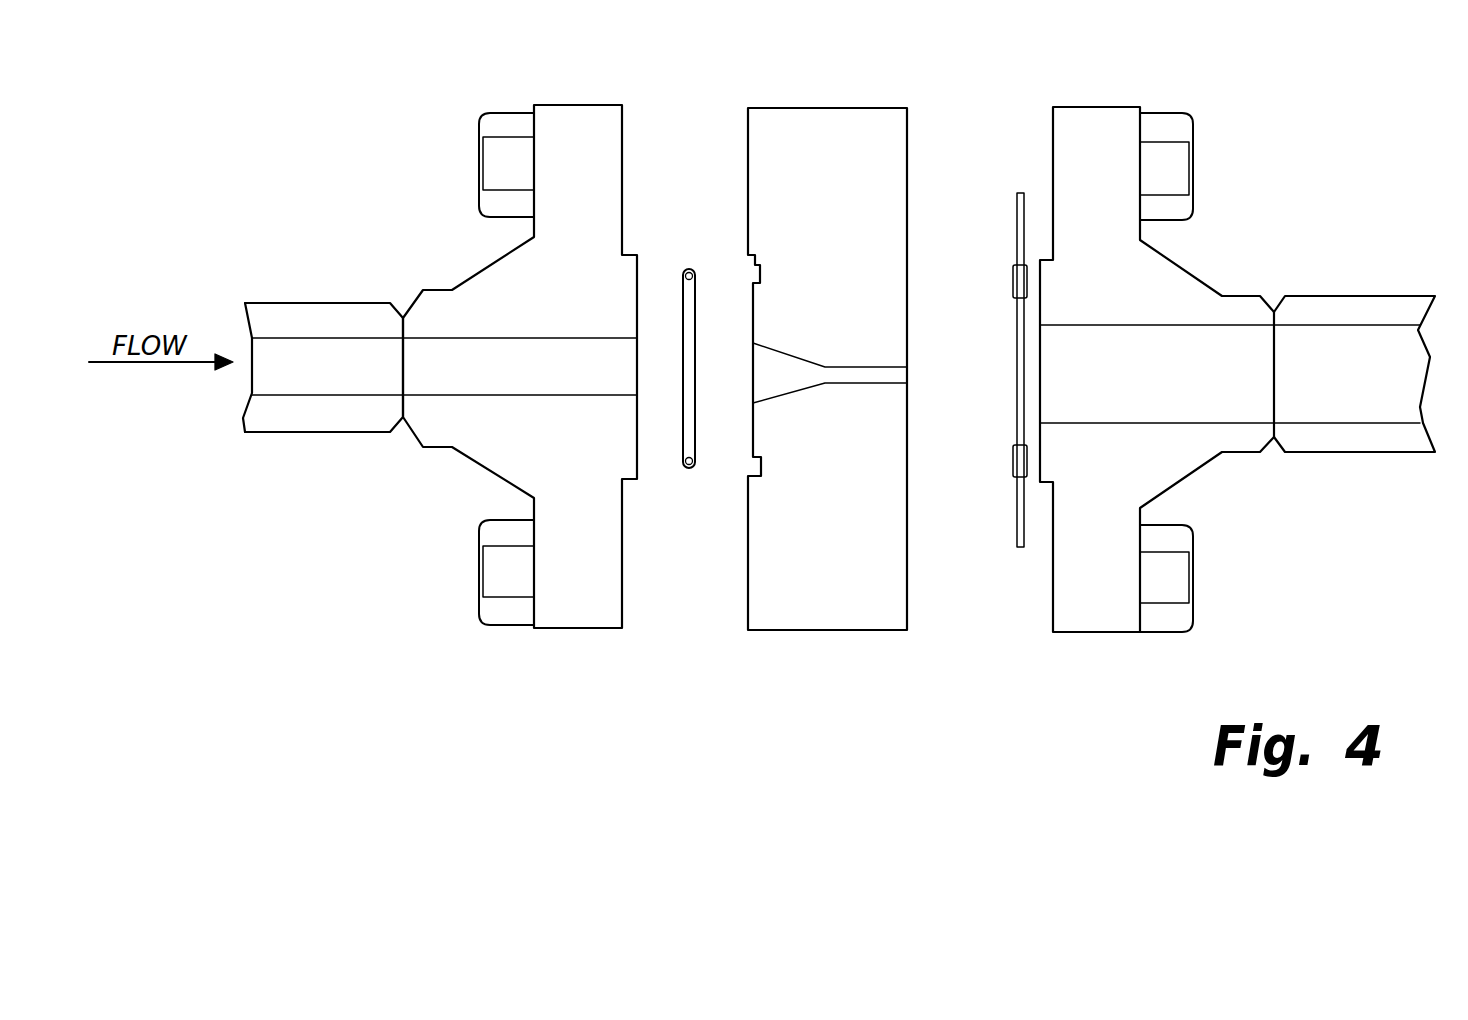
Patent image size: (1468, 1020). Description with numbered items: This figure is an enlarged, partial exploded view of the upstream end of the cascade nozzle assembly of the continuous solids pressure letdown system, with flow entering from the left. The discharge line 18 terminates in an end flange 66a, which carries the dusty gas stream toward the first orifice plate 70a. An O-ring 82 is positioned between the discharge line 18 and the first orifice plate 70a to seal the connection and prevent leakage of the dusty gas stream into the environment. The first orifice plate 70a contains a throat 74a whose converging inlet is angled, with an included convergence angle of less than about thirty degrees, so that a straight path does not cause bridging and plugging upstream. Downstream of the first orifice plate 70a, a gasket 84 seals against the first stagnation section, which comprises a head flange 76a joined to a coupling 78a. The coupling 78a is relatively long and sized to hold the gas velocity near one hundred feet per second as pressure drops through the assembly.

The discharge line 18 is at (278, 432).
The end flange 66a is at (498, 255).
The O-ring 82 is at (690, 270).
The first orifice plate 70a is at (812, 630).
The throat 74a is at (853, 377).
The gasket 84 is at (1022, 193).
The head flange 76a is at (1198, 273).
The coupling 78a is at (1323, 296).